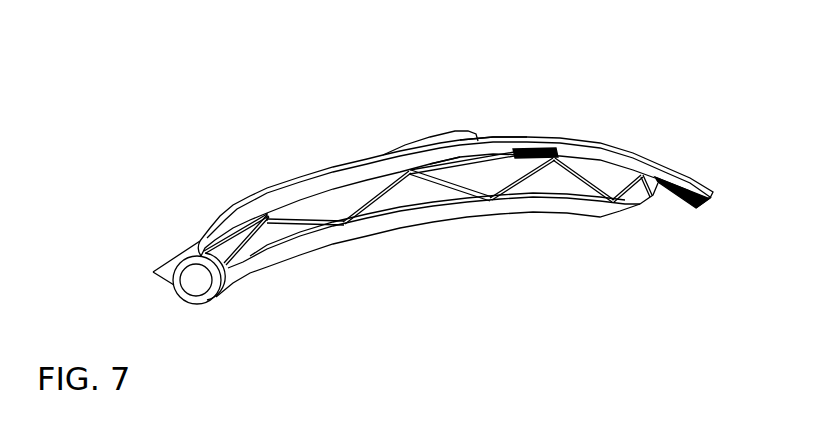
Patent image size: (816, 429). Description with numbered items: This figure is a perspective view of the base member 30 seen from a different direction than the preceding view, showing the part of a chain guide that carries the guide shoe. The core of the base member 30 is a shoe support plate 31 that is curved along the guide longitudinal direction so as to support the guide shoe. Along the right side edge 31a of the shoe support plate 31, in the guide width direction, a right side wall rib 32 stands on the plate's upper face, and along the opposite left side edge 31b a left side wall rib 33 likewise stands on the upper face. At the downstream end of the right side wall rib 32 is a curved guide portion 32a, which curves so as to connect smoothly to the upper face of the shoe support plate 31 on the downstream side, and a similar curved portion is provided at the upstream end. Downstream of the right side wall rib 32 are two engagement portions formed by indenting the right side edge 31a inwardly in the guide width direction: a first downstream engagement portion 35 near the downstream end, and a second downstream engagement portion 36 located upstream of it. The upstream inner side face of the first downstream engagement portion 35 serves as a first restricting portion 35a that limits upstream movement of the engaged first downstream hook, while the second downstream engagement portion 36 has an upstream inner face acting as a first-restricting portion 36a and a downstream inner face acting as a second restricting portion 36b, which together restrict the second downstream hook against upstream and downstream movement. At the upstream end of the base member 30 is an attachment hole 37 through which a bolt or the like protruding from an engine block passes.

The base member 30 is at (188, 97).
The shoe support plate 31 is at (607, 162).
The right side edge 31a is at (488, 150).
The left side edge 31b is at (497, 137).
The right side wall rib 32 is at (330, 172).
The curved guide portion 32a is at (447, 145).
The left side wall rib 33 is at (373, 153).
The first downstream engagement portion 35 is at (672, 205).
The first restricting portion 35a is at (653, 178).
The second downstream engagement portion 36 is at (536, 157).
The first-restricting portion 36a is at (516, 150).
The second restricting portion 36b is at (557, 141).
The attachment hole 37 is at (195, 266).